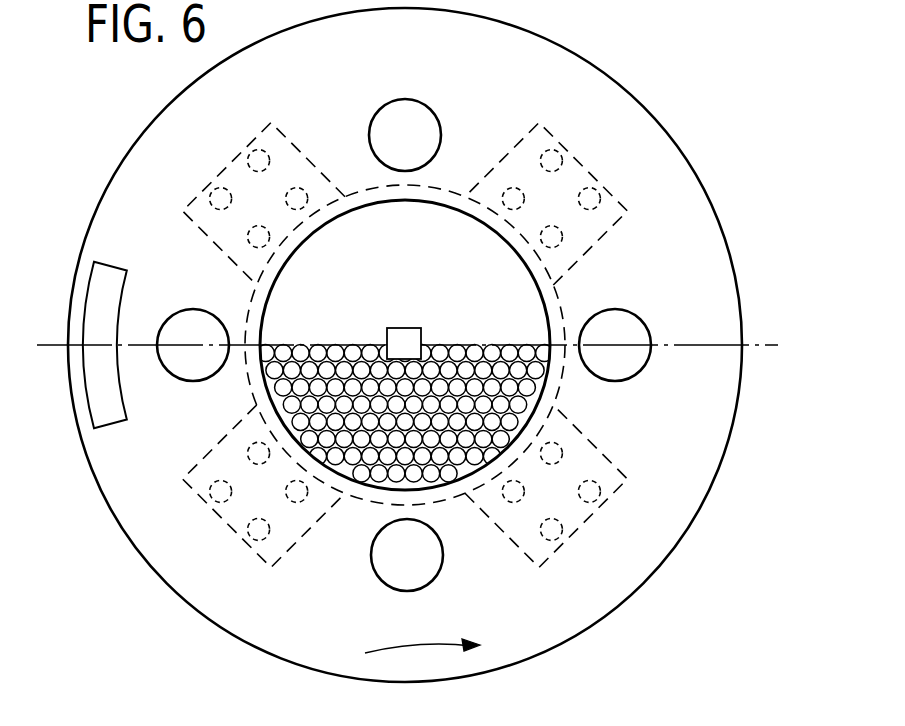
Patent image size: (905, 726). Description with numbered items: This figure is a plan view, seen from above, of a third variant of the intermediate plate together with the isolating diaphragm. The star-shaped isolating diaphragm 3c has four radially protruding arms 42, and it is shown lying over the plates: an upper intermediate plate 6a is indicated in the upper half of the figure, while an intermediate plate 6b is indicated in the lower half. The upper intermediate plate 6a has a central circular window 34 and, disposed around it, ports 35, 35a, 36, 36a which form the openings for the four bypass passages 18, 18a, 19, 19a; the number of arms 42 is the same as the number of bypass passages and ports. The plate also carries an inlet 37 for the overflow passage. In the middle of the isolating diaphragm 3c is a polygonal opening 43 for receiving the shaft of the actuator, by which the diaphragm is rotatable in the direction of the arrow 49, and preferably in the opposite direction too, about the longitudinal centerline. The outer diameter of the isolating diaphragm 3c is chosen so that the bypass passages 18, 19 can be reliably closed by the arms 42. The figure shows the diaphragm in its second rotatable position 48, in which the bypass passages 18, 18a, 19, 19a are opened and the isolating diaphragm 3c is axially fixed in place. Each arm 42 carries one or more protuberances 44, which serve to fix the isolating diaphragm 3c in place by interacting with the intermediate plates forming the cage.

The upper intermediate plate 6a is at (418, 345).
The intermediate plate 6b is at (693, 482).
The central circular window 34 is at (438, 227).
The polygonal opening 43 is at (408, 337).
The star-shaped isolating diaphragm 3c is at (588, 291).
The second rotatable position 48 is at (212, 170).
The radially protruding arms 42 is at (553, 347).
The protuberances 44 is at (542, 535).
The bypass passage 19a is at (431, 105).
The port 36a is at (402, 118).
The bypass passage 18 is at (184, 369).
The port 35 is at (200, 365).
The bypass passage 19 is at (634, 368).
The port 36 is at (618, 365).
The bypass passage 18a is at (368, 559).
The port 35a is at (398, 567).
The inlet 37 is at (96, 379).
The arrow 49 is at (392, 655).